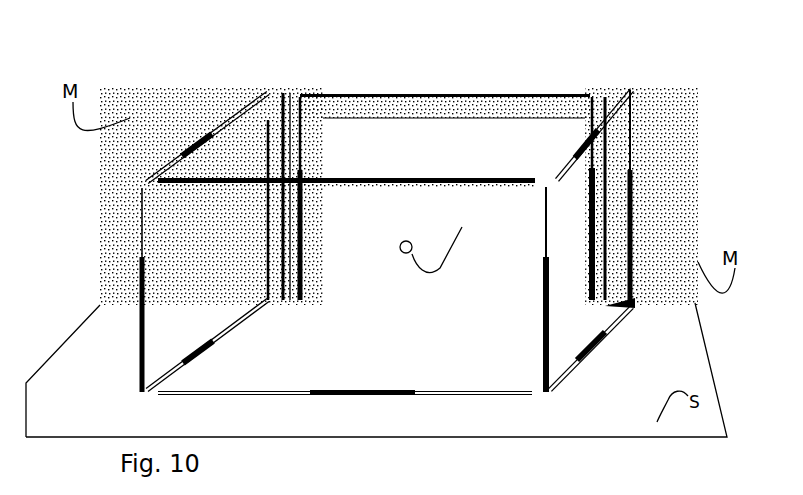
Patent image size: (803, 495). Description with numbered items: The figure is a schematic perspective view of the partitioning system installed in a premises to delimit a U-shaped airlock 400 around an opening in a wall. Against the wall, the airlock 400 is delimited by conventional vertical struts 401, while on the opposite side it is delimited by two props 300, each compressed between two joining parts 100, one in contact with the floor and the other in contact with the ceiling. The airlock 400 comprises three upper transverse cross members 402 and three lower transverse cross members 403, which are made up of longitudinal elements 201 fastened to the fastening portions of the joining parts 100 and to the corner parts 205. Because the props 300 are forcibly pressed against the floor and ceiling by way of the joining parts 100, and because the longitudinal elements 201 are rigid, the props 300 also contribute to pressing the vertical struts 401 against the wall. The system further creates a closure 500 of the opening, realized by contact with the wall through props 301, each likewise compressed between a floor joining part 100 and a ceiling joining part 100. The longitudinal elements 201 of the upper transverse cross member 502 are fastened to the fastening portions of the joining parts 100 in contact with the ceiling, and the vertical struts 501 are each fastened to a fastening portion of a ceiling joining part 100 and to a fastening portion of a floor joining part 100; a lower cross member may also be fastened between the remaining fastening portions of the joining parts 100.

The joining part 100 is at (140, 184).
The longitudinal element 201 is at (350, 95).
The corner part 205 is at (270, 93).
The prop 300 is at (139, 282).
The prop 301 is at (592, 112).
The airlock 400 is at (450, 400).
The vertical strut 401 is at (268, 147).
The upper transverse cross member 402 is at (214, 112).
The lower transverse cross member 403 is at (185, 386).
The closure 500 is at (404, 84).
The vertical strut 501 is at (288, 134).
The upper transverse cross member 502 is at (456, 82).